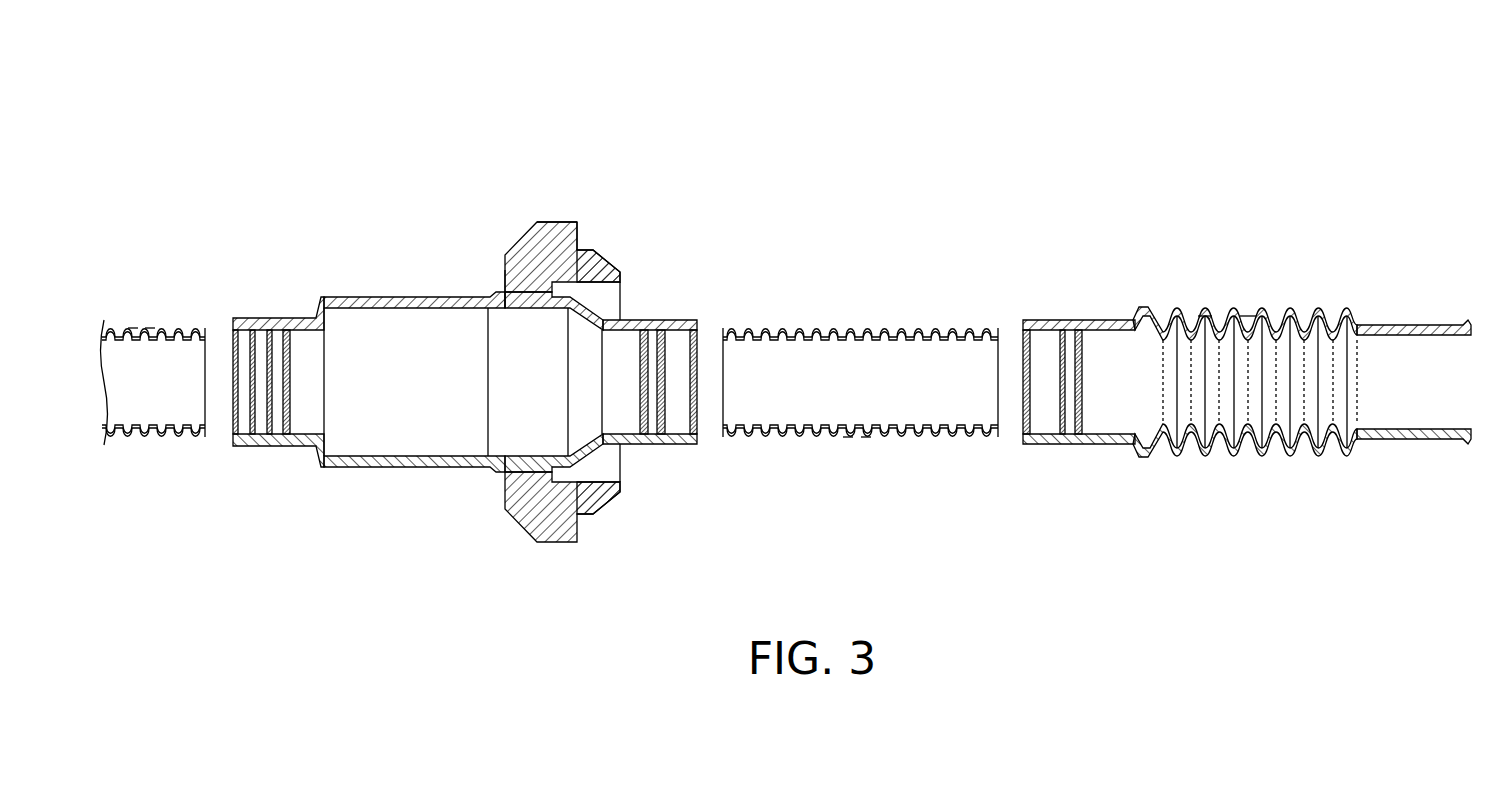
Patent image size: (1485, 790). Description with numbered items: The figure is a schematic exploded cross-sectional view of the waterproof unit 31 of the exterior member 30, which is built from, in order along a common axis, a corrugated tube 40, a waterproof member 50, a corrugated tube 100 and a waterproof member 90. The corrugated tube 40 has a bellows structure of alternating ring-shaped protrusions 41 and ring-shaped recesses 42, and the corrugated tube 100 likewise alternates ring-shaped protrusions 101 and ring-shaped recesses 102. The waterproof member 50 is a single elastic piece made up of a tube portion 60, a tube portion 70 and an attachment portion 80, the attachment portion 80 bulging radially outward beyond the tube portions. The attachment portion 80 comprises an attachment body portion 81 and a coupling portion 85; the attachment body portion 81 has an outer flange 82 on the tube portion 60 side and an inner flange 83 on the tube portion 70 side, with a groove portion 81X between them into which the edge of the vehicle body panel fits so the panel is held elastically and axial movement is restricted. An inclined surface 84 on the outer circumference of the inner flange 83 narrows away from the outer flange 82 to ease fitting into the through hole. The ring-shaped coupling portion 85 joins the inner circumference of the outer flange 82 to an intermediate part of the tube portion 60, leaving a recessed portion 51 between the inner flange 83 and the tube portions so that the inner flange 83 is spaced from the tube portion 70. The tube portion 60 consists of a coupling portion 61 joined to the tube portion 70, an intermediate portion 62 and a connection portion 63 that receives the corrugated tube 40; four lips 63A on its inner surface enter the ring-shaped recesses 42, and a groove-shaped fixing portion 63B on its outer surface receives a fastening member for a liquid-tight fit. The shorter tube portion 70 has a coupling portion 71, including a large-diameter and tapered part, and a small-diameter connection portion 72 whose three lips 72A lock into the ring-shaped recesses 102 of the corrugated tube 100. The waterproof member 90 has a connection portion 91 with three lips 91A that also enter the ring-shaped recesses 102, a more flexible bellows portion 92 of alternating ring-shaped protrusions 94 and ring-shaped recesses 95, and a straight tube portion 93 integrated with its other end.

The exterior member 30 is at (786, 318).
The waterproof unit 31 is at (1330, 126).
The corrugated tube 40 is at (180, 276).
The ring-shaped protrusion 41 is at (138, 330).
The ring-shaped recess 42 is at (150, 330).
The waterproof member 50 is at (518, 537).
The recessed portion 51 is at (612, 480).
The tube portion 60 is at (487, 510).
The coupling portion 61 is at (512, 498).
The intermediate portion 62 is at (410, 470).
The connection portion 63 is at (302, 448).
The lip 63A is at (243, 455).
The fixing portion 63B is at (278, 448).
The tube portion 70 is at (705, 246).
The coupling portion 71 is at (645, 320).
The connection portion 72 is at (662, 320).
The lip 72A is at (697, 322).
The attachment portion 80 is at (450, 220).
The attachment body portion 81 is at (512, 248).
The groove portion 81X is at (578, 236).
The outer flange 82 is at (553, 226).
The inner flange 83 is at (606, 254).
The inclined surface 84 is at (600, 500).
The coupling portion 85 is at (508, 292).
The waterproof member 90 is at (1145, 230).
The connection portion 91 is at (1125, 318).
The lip 91A is at (1062, 322).
The bellows portion 92 is at (1200, 268).
The straight tube portion 93 is at (1370, 322).
The ring-shaped protrusion 94 is at (1205, 318).
The ring-shaped recess 95 is at (1248, 318).
The corrugated tube 100 is at (803, 487).
The ring-shaped protrusion 101 is at (848, 440).
The ring-shaped recess 102 is at (866, 440).